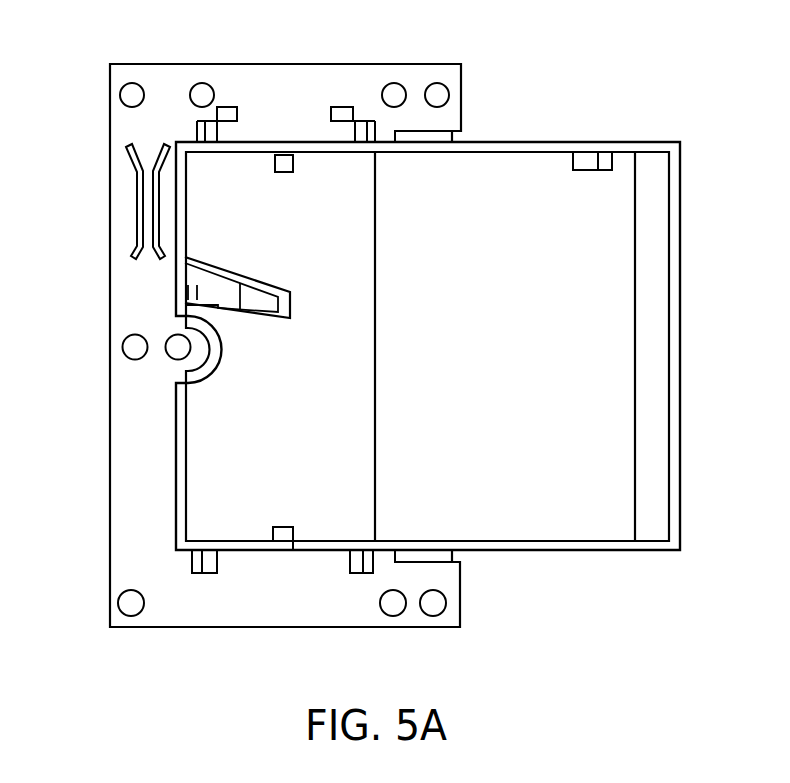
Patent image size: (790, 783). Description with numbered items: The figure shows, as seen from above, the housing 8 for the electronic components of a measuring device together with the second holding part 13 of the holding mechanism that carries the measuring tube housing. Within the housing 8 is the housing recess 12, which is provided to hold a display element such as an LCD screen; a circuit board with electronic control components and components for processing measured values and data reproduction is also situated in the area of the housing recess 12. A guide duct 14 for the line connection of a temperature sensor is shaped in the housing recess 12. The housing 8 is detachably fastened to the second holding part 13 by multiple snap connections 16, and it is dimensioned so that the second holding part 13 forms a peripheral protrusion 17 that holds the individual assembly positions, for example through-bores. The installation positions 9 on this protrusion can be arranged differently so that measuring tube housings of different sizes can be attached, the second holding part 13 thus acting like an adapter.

The housing 8 is at (614, 253).
The installation positions 9 is at (392, 607).
The housing recess 12 is at (440, 346).
The second holding part 13 is at (126, 492).
The guide duct 14 is at (232, 288).
The snap connections 16 is at (227, 107).
The peripheral protrusion 17 is at (118, 293).